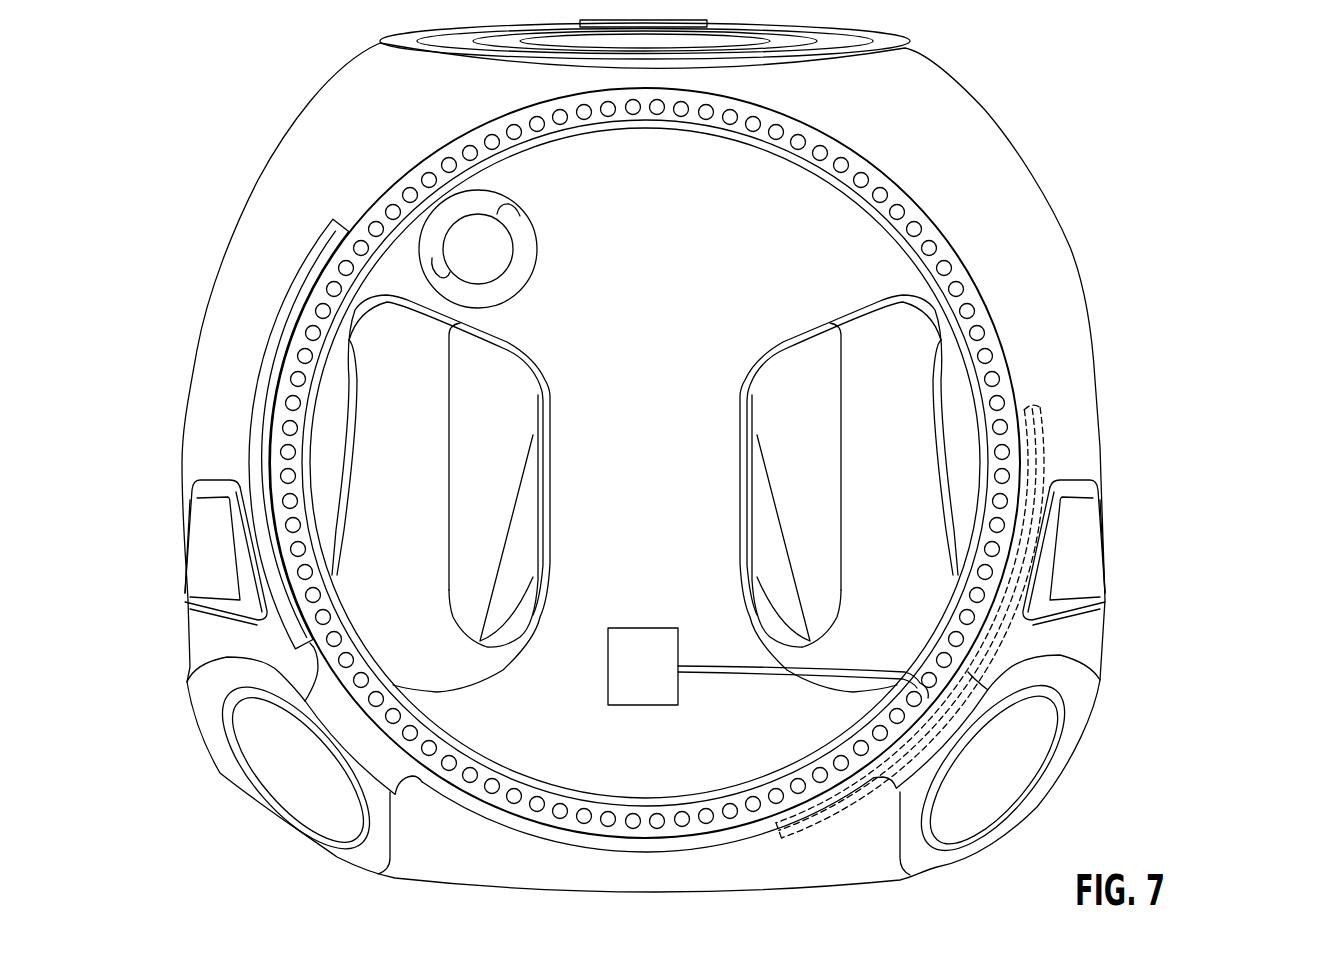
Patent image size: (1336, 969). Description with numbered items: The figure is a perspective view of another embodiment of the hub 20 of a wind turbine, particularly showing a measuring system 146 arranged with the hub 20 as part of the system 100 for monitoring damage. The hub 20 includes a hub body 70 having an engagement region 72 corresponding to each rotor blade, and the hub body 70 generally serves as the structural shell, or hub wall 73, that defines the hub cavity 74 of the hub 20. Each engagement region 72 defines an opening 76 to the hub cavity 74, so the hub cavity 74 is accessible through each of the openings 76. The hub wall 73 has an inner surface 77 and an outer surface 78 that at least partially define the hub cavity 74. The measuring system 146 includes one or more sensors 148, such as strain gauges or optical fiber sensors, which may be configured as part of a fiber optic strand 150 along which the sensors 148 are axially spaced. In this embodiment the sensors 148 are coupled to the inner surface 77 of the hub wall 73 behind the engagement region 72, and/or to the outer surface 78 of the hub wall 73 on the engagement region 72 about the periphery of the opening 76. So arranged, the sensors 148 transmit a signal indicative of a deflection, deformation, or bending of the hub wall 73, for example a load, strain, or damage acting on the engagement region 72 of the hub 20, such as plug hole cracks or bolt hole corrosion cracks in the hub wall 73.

The hub 20 is at (170, 128).
The hub body 70 is at (368, 143).
The engagement region 72 is at (950, 198).
The hub wall 73 is at (967, 90).
The hub cavity 74 is at (890, 273).
The opening 76 is at (982, 312).
The inner surface 77 is at (953, 813).
The outer surface 78 is at (1043, 763).
The system for monitoring damage 100 is at (1215, 445).
The measuring system 146 is at (643, 700).
The sensor 148 is at (1035, 465).
The fiber optic strand 150 is at (1037, 498).